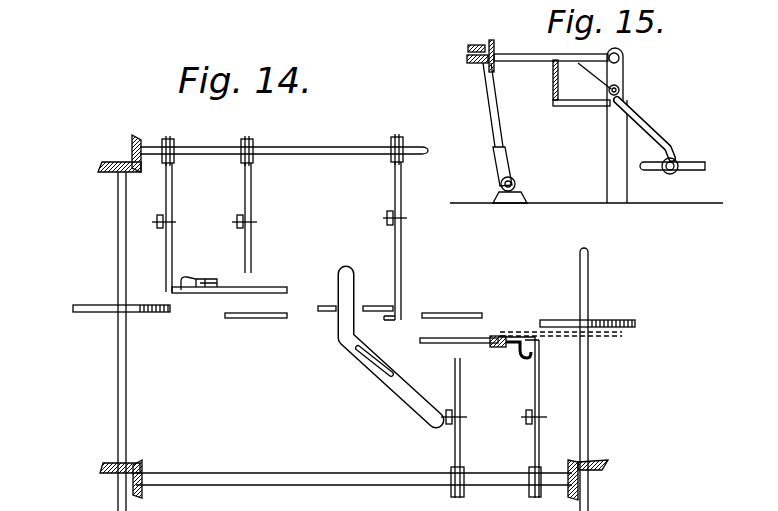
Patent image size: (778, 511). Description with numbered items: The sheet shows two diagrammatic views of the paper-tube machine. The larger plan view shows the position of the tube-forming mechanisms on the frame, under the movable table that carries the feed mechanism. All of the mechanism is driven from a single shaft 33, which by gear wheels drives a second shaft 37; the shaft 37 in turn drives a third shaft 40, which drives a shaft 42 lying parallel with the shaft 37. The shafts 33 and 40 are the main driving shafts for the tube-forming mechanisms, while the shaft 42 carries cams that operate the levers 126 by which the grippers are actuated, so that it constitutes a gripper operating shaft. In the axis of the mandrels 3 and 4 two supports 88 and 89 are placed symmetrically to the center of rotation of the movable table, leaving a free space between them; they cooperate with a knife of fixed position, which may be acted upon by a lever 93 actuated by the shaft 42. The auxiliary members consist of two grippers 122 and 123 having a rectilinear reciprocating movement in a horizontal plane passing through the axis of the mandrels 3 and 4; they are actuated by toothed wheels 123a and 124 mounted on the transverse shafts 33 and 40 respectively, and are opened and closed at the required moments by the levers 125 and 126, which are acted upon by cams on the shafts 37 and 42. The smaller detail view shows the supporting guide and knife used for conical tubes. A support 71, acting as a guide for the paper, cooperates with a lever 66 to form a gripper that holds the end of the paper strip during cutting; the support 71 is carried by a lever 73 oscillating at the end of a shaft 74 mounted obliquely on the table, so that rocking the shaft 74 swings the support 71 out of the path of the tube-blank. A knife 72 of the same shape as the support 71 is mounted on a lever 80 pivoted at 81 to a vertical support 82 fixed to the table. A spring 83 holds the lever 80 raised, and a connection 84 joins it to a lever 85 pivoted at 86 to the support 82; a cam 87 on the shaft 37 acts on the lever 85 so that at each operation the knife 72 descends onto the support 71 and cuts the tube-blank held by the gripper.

In FIG. 14, the mandrel 3 is at (452, 313).
In FIG. 14, the mandrel 4 is at (255, 318).
In FIG. 14, the single shaft 33 is at (590, 413).
In FIG. 14, the second shaft 37 is at (316, 485).
In FIG. 15, the second shaft 37 is at (684, 167).
In FIG. 14, the third shaft 40 is at (117, 392).
In FIG. 14, the gripper operating shaft 42 is at (323, 154).
In FIG. 15, the lever 66 is at (478, 45).
In FIG. 15, the support 71 is at (475, 63).
In FIG. 15, the knife 72 is at (492, 40).
In FIG. 15, the lever 73 is at (492, 110).
In FIG. 15, the shaft 74 is at (496, 183).
In FIG. 15, the lever 80 is at (514, 51).
In FIG. 15, the pivot 81 is at (620, 57).
In FIG. 15, the vertical support 82 is at (625, 92).
In FIG. 15, the spring 83 is at (625, 71).
In FIG. 15, the connection 84 is at (553, 83).
In FIG. 15, the lever 85 is at (578, 106).
In FIG. 15, the pivot 86 is at (642, 109).
In FIG. 15, the cam 87 is at (683, 160).
In FIG. 14, the support 88 is at (378, 306).
In FIG. 14, the support 89 is at (326, 306).
In FIG. 14, the lever 93 is at (402, 252).
In FIG. 14, the gripper 122 is at (428, 343).
In FIG. 14, the gripper 123 is at (262, 290).
In FIG. 14, the toothed wheel 123a is at (608, 319).
In FIG. 14, the toothed wheel 124 is at (85, 305).
In FIG. 14, the lever 125 is at (539, 380).
In FIG. 14, the lever 126 is at (174, 241).